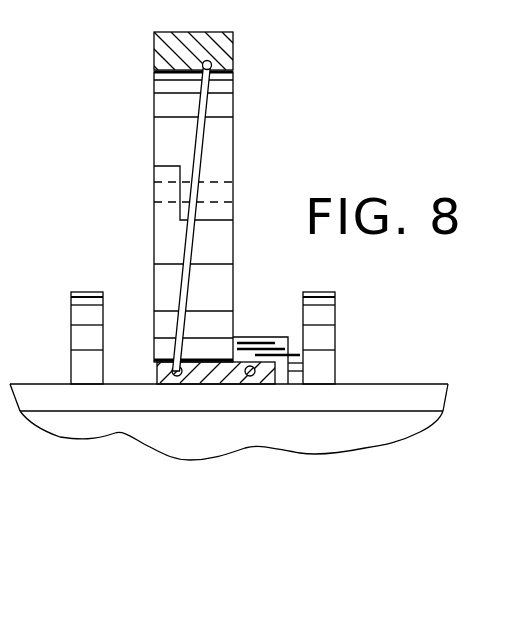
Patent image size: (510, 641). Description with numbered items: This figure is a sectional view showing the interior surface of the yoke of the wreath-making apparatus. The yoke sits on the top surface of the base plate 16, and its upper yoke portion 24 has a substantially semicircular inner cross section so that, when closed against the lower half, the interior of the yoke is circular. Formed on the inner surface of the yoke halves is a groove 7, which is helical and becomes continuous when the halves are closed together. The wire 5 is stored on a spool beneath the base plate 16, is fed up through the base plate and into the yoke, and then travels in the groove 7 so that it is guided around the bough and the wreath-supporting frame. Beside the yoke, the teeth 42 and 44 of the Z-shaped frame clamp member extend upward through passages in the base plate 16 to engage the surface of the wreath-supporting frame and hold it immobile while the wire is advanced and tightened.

The upper yoke portion 24 is at (223, 41).
The wire 5 is at (217, 67).
The groove 7 is at (202, 163).
The tooth 42 is at (80, 332).
The tooth 44 is at (327, 337).
The base plate 16 is at (403, 395).